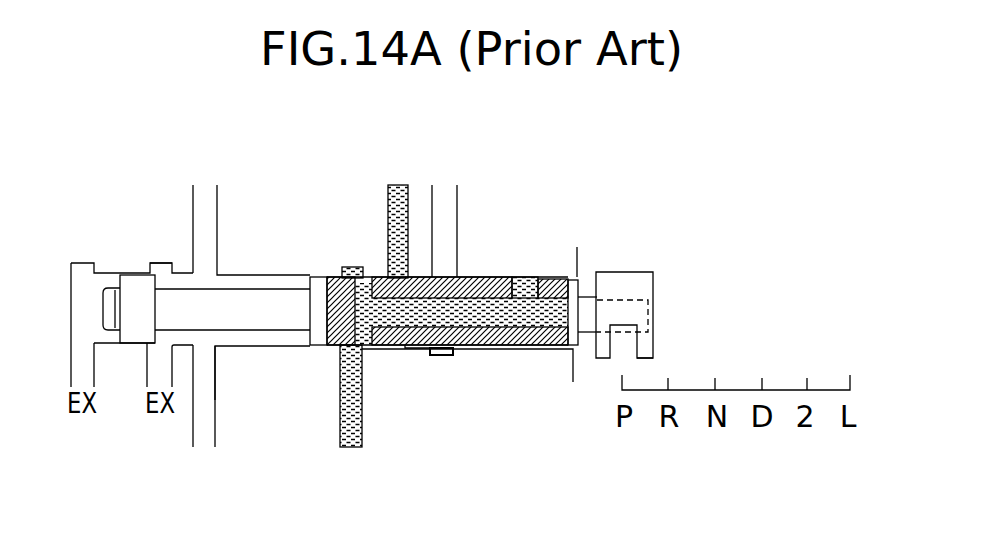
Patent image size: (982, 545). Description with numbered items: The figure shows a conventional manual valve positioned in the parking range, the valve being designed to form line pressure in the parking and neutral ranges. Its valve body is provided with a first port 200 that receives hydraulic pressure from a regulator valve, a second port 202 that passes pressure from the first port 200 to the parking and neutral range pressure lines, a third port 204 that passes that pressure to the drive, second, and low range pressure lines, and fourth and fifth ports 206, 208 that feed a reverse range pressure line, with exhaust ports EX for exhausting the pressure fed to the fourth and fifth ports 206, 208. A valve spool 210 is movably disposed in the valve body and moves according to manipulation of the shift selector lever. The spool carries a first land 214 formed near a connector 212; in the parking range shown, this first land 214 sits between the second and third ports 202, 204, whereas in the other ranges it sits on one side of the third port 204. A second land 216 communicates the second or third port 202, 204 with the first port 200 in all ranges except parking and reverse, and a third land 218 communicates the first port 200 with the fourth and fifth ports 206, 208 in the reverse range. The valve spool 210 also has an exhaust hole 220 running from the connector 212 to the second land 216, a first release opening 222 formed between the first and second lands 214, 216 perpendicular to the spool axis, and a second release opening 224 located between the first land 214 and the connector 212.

The first port 200 is at (340, 359).
The second port 202 is at (388, 262).
The third port 204 is at (445, 262).
The fourth port 206 is at (197, 261).
The fifth port 208 is at (213, 352).
The valve spool 210 is at (673, 281).
The connector 212 is at (650, 352).
The first land 214 is at (422, 348).
The second land 216 is at (317, 282).
The third land 218 is at (132, 282).
The exhaust hole 220 is at (491, 322).
The first release opening 222 is at (377, 348).
The second release opening 224 is at (517, 280).